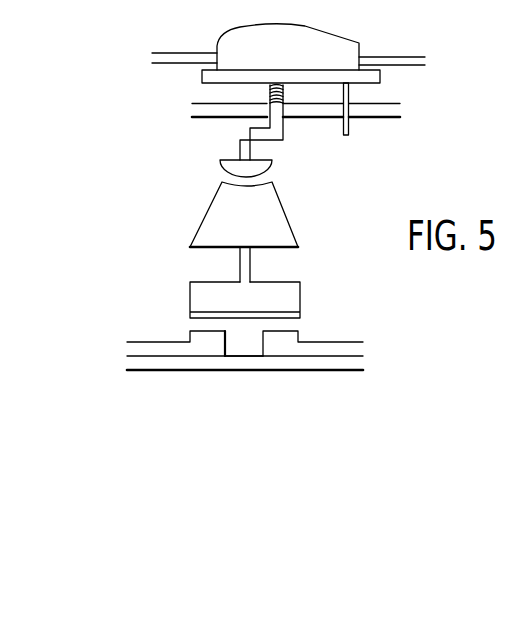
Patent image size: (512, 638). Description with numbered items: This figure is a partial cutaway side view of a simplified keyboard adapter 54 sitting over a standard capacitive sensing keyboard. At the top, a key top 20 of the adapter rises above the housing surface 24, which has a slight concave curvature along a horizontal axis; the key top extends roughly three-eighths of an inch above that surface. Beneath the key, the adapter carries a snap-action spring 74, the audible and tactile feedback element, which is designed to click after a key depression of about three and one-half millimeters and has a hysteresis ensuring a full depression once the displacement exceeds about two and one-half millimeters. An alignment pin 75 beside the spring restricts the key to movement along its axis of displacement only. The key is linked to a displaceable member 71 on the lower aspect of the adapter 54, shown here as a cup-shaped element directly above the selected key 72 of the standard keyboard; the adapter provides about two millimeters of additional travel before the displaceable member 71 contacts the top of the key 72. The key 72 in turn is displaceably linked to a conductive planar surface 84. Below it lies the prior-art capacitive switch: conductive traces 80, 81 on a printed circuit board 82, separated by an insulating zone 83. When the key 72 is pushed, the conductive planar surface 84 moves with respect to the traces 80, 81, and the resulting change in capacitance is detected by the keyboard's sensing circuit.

The key top 20 is at (237, 50).
The surface 24 is at (400, 57).
The adapter 54 is at (386, 120).
The snap-action spring 74 is at (268, 95).
The alignment pin 75 is at (350, 96).
The displaceable member 71 is at (271, 166).
The key 72 is at (260, 226).
The conductive planar surface 84 is at (300, 317).
The conductive trace 80 is at (195, 345).
The conductive trace 81 is at (288, 347).
The printed circuit board 82 is at (350, 363).
The insulating zone 83 is at (245, 345).